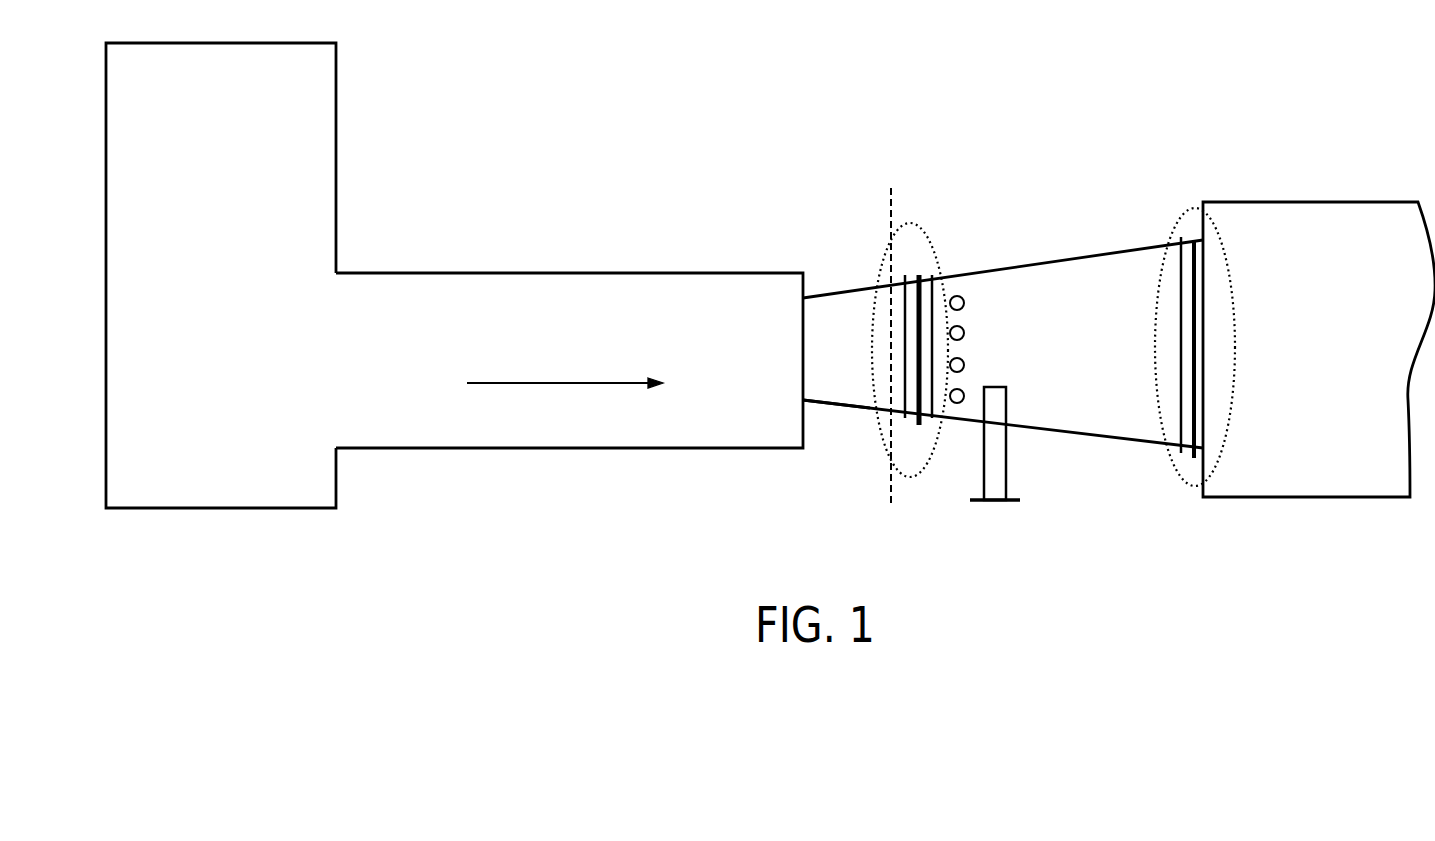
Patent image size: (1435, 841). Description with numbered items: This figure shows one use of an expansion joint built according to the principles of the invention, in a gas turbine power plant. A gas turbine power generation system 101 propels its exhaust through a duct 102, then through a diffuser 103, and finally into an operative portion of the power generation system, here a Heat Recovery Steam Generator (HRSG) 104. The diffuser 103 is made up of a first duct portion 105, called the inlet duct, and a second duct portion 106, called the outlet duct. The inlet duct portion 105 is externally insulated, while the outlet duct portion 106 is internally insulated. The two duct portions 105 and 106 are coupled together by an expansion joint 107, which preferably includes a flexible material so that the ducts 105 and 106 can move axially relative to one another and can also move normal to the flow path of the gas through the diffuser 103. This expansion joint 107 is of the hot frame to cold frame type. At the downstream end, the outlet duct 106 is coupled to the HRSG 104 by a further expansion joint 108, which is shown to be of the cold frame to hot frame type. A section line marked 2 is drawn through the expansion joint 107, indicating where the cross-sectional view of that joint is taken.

The gas turbine power generation system 101 is at (225, 43).
The duct 102 is at (535, 273).
The diffuser 103 is at (957, 210).
The Heat Recovery Steam Generator (HRSG) 104 is at (1365, 202).
The first duct portion (inlet duct) 105 is at (833, 411).
The second duct portion (outlet duct) 106 is at (1043, 430).
The expansion joint 107 is at (921, 467).
The expansion joint 108 is at (1192, 208).
The section line 2- 2 is at (890, 217).